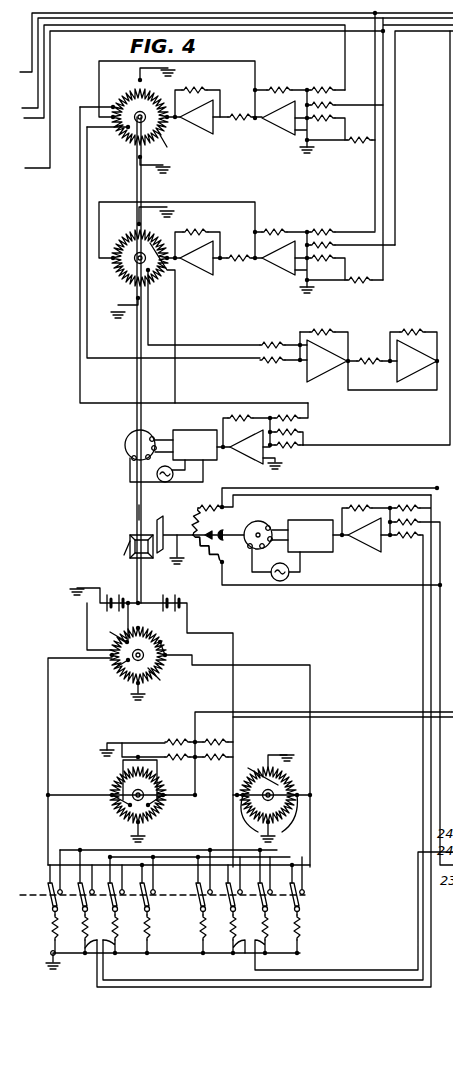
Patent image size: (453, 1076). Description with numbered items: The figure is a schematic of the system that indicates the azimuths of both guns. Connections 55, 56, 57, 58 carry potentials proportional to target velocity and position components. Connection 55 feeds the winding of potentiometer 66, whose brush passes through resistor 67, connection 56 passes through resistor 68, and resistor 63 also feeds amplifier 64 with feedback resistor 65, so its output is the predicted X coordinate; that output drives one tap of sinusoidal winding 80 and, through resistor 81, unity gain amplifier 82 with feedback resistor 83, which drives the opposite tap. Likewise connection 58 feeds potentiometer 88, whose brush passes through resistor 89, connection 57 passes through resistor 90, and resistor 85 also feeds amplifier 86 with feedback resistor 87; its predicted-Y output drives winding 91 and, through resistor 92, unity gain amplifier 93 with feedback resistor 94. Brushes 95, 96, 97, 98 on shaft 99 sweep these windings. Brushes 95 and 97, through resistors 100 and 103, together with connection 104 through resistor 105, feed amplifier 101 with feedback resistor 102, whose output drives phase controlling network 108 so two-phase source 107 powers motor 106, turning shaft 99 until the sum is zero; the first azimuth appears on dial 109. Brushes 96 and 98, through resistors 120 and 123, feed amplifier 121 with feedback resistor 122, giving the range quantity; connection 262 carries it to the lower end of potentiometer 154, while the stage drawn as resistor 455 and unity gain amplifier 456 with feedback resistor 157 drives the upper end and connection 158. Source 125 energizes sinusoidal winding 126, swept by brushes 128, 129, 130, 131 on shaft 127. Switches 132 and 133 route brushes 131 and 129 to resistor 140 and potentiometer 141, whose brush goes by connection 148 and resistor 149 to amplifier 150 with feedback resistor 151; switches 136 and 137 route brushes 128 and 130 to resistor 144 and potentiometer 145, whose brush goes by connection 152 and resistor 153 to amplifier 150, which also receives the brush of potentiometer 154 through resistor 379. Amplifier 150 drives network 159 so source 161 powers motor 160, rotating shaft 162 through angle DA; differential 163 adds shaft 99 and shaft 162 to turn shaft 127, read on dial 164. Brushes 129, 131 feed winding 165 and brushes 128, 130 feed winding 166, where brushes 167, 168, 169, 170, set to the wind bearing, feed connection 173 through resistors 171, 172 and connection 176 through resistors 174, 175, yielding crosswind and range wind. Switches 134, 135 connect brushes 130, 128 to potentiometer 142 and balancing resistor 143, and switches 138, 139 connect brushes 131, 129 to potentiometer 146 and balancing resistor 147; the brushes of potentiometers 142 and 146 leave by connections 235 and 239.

The connection 55 is at (33, 40).
The connection 56 is at (39, 61).
The connection 57 is at (45, 82).
The connection 58 is at (51, 103).
The brush 95 is at (127, 100).
The brush 96 is at (122, 143).
The potentiometer winding 80 is at (164, 141).
The feedback resistor 83 is at (187, 88).
The resistor 81 is at (242, 112).
The unity gain amplifier 82 is at (197, 123).
The feedback resistor 65 is at (282, 82).
The resistor 68 is at (337, 89).
The resistor 63 is at (336, 105).
The resistor 67 is at (337, 118).
The amplifier 64 is at (284, 126).
The potentiometer 66 is at (356, 147).
The brush 97 is at (131, 222).
The feedback resistor 94 is at (190, 228).
The feedback resistor 87 is at (272, 220).
The resistor 90 is at (318, 228).
The resistor 85 is at (335, 245).
The resistor 89 is at (337, 258).
The resistor 92 is at (243, 252).
The unity gain amplifier 93 is at (202, 270).
The amplifier 86 is at (283, 268).
The potentiometer 88 is at (356, 288).
The potentiometer winding 91 is at (145, 296).
The brush 98 is at (165, 290).
The connection 104 is at (450, 292).
The shaft 99 is at (136, 372).
The resistor 123 is at (283, 337).
The feedback resistor 122 is at (318, 334).
The feedback resistor 157 is at (418, 326).
The resistor 120 is at (270, 365).
The amplifier 121 is at (318, 368).
The resistor 455 is at (366, 370).
The amplifier 456 is at (404, 370).
The feedback resistor 102 is at (244, 414).
The resistor 100 is at (284, 412).
The phase controlling network 108 is at (200, 428).
The two-phase motor 106 is at (124, 445).
The resistor 103 is at (303, 432).
The resistor 105 is at (291, 449).
The amplifier 101 is at (253, 460).
The source of two-phase power 107 is at (170, 483).
The feedback resistor 151 is at (358, 508).
The resistor 379 is at (404, 506).
The two-phase motor 160 is at (248, 522).
The phase controlling network 159 is at (322, 518).
The potentiometer 154 is at (200, 513).
The dial 109 is at (132, 510).
The differential gear 163 is at (128, 545).
The shaft 162 is at (224, 540).
The amplifier 150 is at (365, 545).
The resistor 153 is at (400, 538).
The shaft 127 is at (128, 560).
The dial 164 is at (172, 576).
The resistor 149 is at (398, 556).
The source of two-phase power 161 is at (274, 582).
The source of voltage 125 is at (175, 602).
The brush 130 is at (118, 638).
The connection 262 is at (431, 625).
The brush 131 is at (108, 665).
The brush 129 is at (190, 665).
The potentiometer winding 126 is at (118, 683).
The brush 128 is at (152, 680).
The connection 176 is at (347, 712).
The connection 173 is at (348, 718).
The resistor 171 is at (178, 738).
The resistor 172 is at (233, 728).
The connection 158 is at (431, 752).
The resistor 175 is at (215, 760).
The resistor 174 is at (200, 765).
The brush 170 is at (212, 796).
The connection 152 is at (423, 782).
The connection 148 is at (431, 802).
The brush 167 is at (112, 800).
The potentiometer winding 165 is at (115, 828).
The brush 168 is at (152, 825).
The brush 169 is at (240, 826).
The potentiometer winding 166 is at (300, 825).
The switch 132 is at (50, 903).
The switch 133 is at (73, 899).
The switch 134 is at (103, 899).
The switch 135 is at (134, 899).
The switch 136 is at (200, 900).
The switch 137 is at (220, 899).
The switch 138 is at (251, 899).
The switch 139 is at (298, 897).
The resistor 140 is at (52, 924).
The resistor 144 is at (203, 936).
The balancing resistor 143 is at (150, 938).
The balancing resistor 147 is at (305, 940).
The potentiometer 141 is at (58, 963).
The potentiometer 142 is at (118, 950).
The potentiometer 145 is at (222, 955).
The potentiometer 146 is at (282, 952).
The connection 239 is at (362, 980).
The connection 235 is at (345, 987).